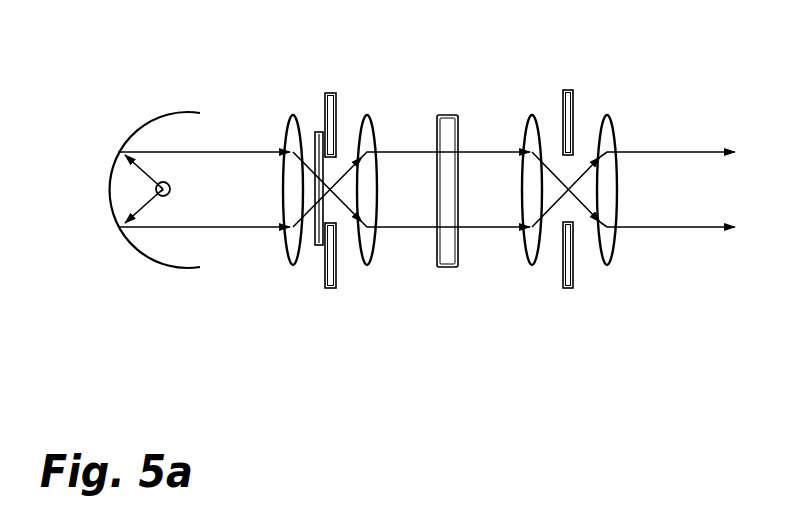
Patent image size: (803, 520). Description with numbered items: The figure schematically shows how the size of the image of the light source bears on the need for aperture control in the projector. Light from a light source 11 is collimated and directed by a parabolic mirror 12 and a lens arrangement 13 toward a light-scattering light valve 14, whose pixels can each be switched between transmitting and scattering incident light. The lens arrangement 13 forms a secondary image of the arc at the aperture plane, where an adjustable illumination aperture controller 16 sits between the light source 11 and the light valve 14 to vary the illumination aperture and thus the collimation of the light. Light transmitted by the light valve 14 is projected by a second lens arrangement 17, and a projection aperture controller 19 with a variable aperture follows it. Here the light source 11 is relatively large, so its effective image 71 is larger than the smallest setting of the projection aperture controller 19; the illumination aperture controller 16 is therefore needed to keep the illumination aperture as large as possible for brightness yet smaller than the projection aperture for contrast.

The light source 11 is at (168, 196).
The parabolic mirror 12 is at (145, 250).
The lens arrangement 13 is at (293, 265).
The light valve 14 is at (458, 115).
The illumination aperture controller 16 is at (325, 93).
The lens arrangement 17 is at (532, 265).
The projection aperture controller 19 is at (563, 90).
The effective image 71 is at (318, 132).